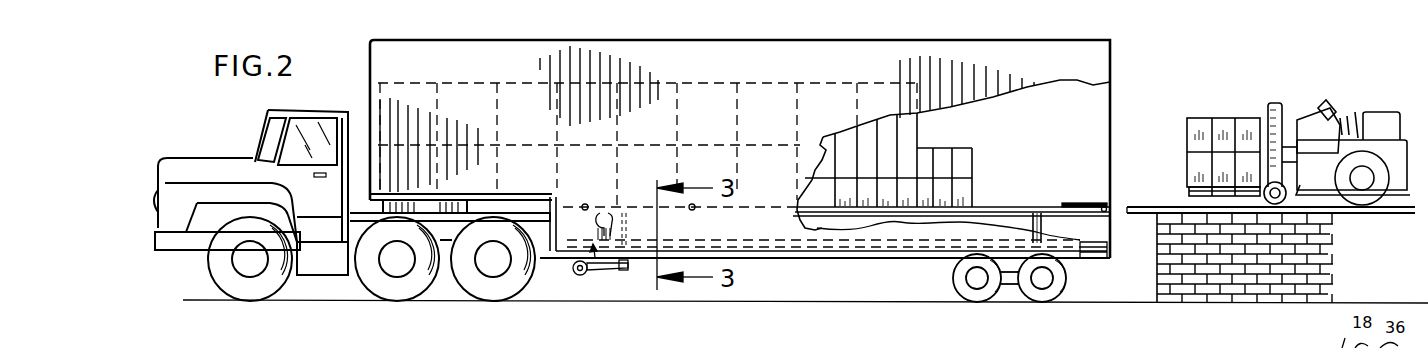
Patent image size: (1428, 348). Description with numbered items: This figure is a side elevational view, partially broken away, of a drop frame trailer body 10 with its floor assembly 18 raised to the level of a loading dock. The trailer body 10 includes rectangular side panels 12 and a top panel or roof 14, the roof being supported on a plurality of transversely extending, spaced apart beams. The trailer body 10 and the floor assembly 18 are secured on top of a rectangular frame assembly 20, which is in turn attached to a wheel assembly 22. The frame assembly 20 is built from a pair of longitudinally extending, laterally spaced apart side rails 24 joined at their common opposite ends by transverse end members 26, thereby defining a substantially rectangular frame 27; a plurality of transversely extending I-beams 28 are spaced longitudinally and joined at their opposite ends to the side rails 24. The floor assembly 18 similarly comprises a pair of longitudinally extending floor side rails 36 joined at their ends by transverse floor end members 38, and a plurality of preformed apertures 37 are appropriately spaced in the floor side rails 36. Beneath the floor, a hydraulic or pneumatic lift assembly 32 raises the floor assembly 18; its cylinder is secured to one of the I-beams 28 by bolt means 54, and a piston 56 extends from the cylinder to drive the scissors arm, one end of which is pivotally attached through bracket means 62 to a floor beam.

The drop frame trailer body 10 is at (893, 33).
The side panels 12 is at (368, 88).
The top panel or roof 14 is at (547, 38).
The floor assembly 18 is at (1022, 198).
The frame assembly 20 is at (1106, 268).
The wheel assembly 22 is at (953, 283).
The side rails 24 is at (918, 258).
The transverse end members 26 is at (1108, 254).
The rectangular frame 27 is at (768, 270).
The I-beams 28 is at (1090, 265).
The lift assembly 32 is at (588, 282).
The floor side rails 36 is at (1081, 203).
The preformed apertures 37 is at (1033, 206).
The transverse floor end members 38 is at (1108, 208).
The bolt means 54 is at (604, 272).
The piston 56 is at (603, 202).
The bracket means 62 is at (805, 322).